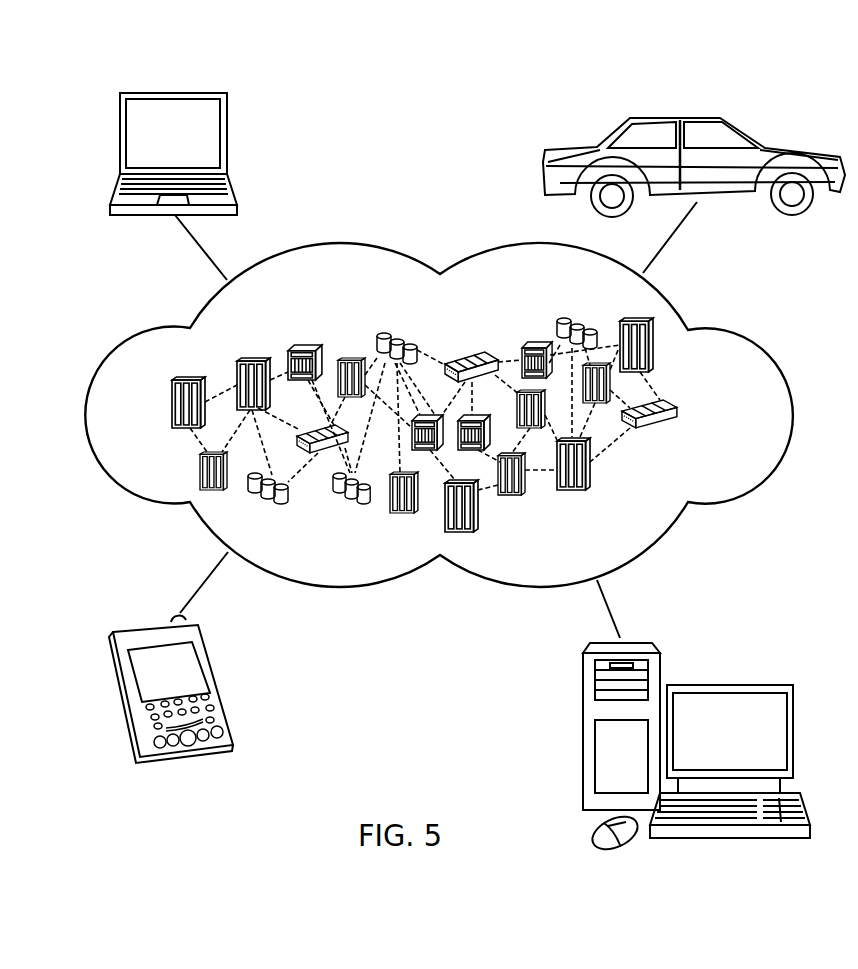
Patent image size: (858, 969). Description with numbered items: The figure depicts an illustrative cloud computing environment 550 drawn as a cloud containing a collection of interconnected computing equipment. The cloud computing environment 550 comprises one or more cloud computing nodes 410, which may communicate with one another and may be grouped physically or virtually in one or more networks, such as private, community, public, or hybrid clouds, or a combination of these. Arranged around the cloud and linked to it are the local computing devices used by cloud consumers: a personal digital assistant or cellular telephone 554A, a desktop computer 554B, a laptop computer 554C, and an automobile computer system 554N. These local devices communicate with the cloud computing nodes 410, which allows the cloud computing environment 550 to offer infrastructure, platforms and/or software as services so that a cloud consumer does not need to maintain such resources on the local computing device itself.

The cloud computing environment 550 is at (742, 330).
The cloud computing node 410 is at (692, 415).
The personal digital assistant (PDA) or cellular telephone 554A is at (153, 628).
The desktop computer 554B is at (728, 683).
The laptop computer 554C is at (172, 92).
The automobile computer system 554N is at (673, 118).